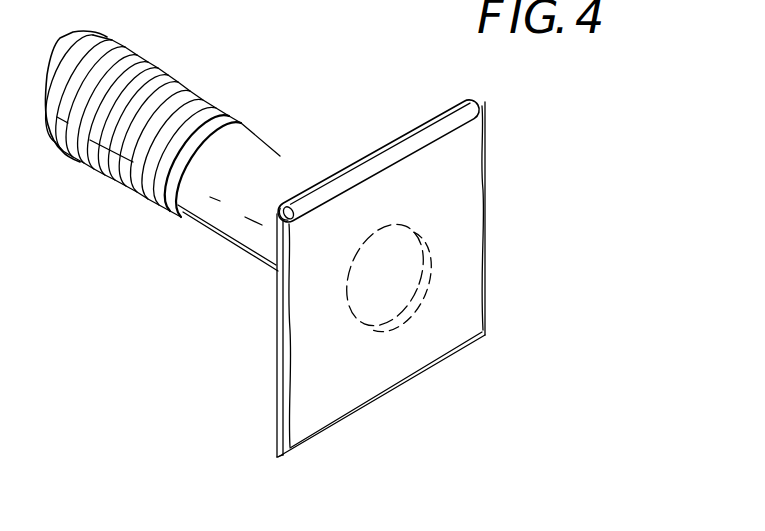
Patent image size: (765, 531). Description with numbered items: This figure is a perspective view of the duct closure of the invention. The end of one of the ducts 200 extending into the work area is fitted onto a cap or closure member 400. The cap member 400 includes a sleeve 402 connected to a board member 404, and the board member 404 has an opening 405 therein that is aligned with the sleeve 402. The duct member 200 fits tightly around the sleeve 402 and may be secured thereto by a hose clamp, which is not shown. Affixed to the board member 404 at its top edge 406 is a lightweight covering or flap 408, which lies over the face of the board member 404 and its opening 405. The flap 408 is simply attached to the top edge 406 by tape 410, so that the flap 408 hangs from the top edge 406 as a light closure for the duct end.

The duct 200 is at (182, 93).
The sleeve 402 is at (241, 226).
The cap or closure member 400 is at (412, 259).
The board member 404 is at (287, 393).
The opening 405 is at (408, 262).
The top edge 406 is at (485, 92).
The flap 408 is at (458, 327).
The tape 410 is at (413, 126).